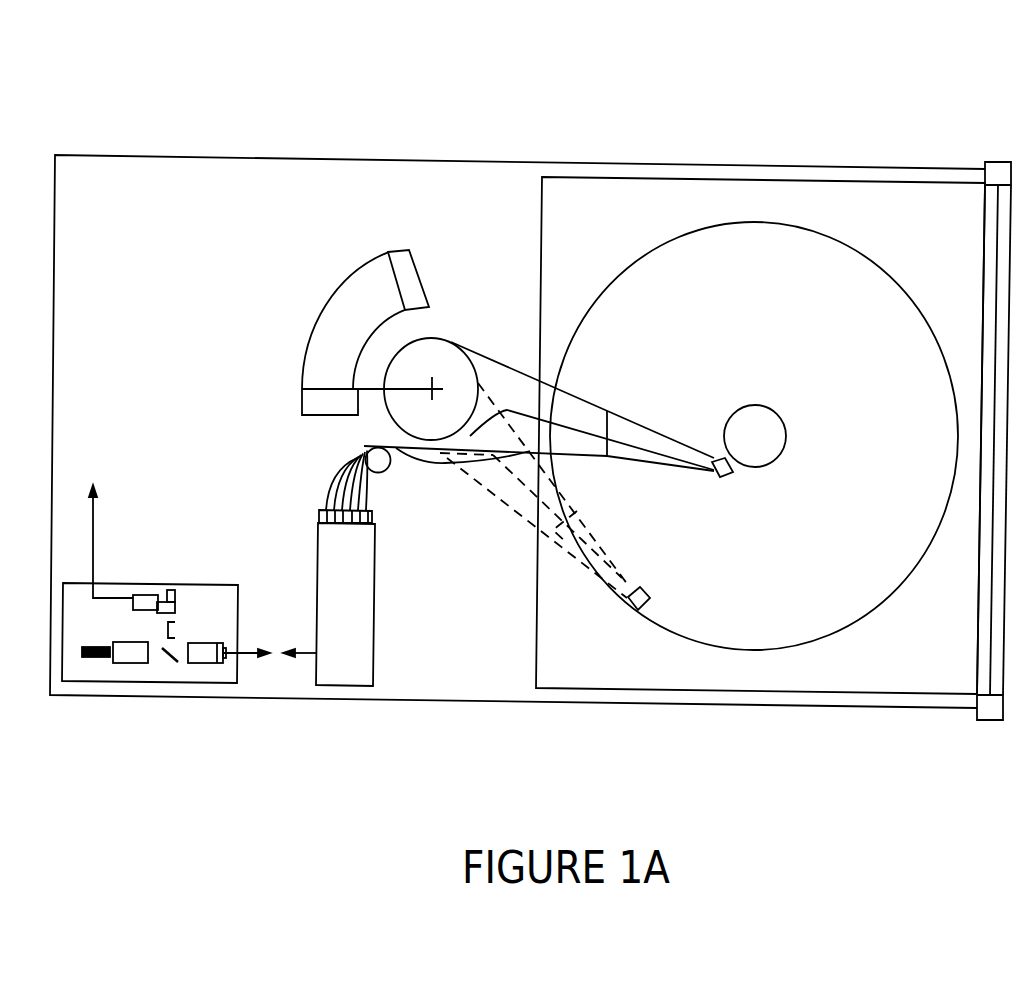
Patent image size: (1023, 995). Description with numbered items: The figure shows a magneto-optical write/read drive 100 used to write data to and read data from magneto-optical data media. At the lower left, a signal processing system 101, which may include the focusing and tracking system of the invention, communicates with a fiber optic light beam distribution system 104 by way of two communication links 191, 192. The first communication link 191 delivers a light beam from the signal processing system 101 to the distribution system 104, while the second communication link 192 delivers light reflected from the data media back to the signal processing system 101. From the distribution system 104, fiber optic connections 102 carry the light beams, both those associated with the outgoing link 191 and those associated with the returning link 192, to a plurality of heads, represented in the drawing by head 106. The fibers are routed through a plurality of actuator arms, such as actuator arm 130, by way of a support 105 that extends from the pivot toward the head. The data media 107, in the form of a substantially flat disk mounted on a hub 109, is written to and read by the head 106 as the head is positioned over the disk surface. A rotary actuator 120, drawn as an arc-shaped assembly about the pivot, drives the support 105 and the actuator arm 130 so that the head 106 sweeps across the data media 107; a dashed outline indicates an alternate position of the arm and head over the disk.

The write/read drive 100 is at (822, 78).
The signal processing system 101 is at (93, 660).
The fiber optic connections 102 is at (328, 463).
The fiber optic light beam distribution system 104 is at (382, 578).
The support 105 is at (595, 417).
The head 106 is at (730, 480).
The data media 107 is at (848, 232).
The hub 109 is at (767, 435).
The rotary actuator 120 is at (398, 254).
The actuator arm 130 is at (655, 437).
The communication link 191 is at (262, 669).
The communication link 192 is at (296, 669).